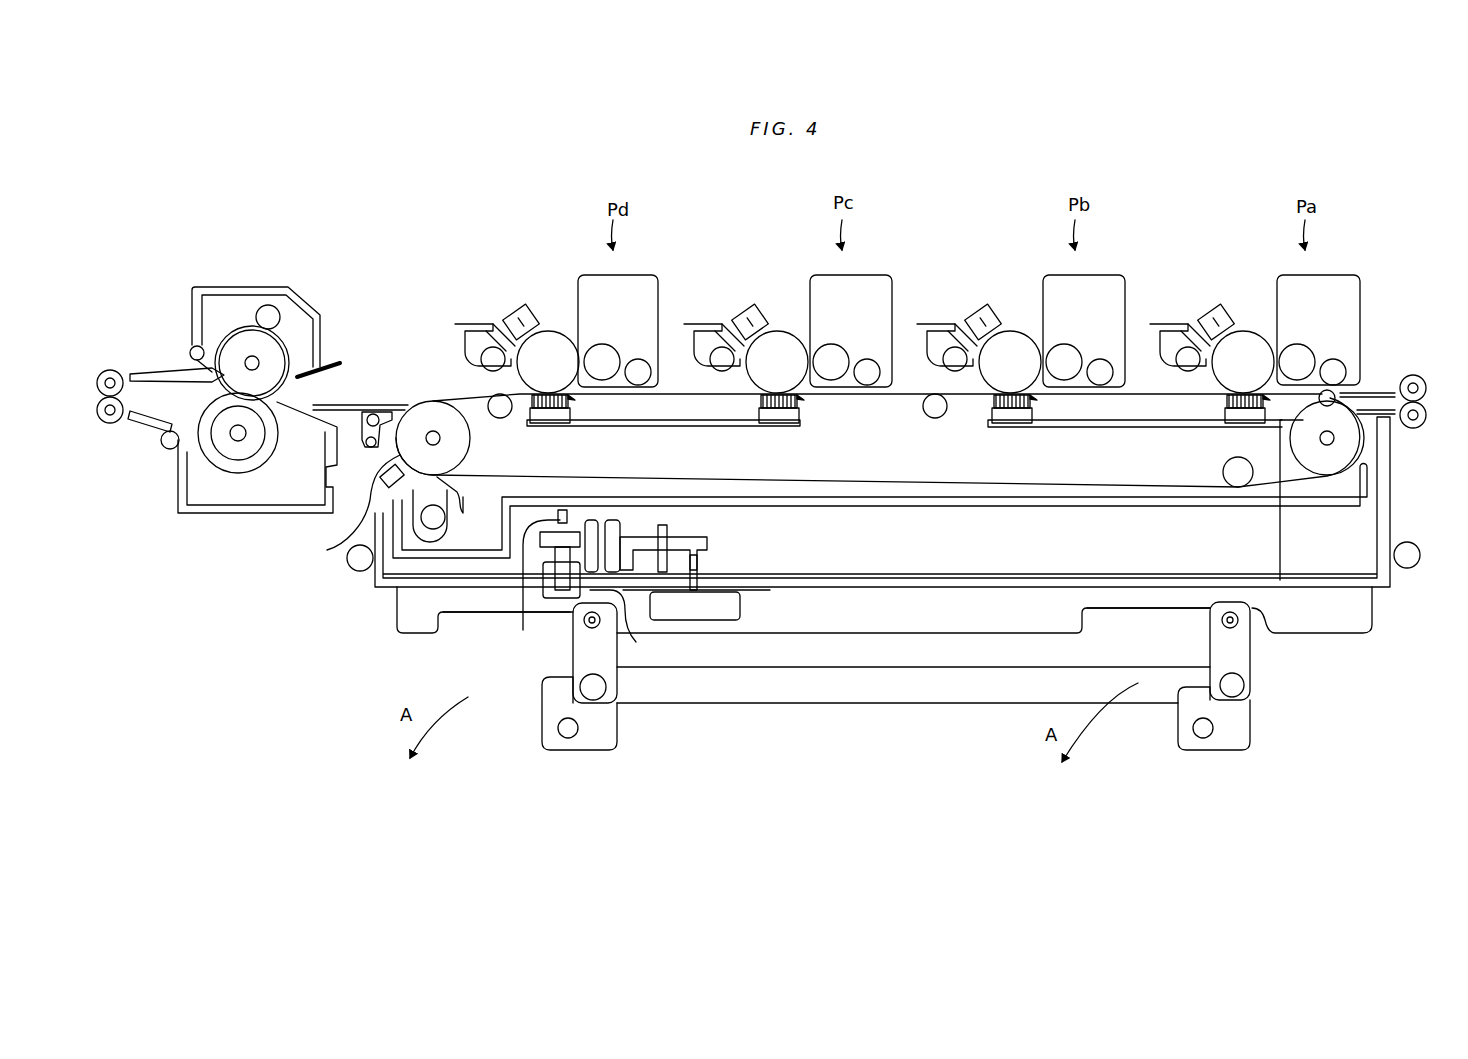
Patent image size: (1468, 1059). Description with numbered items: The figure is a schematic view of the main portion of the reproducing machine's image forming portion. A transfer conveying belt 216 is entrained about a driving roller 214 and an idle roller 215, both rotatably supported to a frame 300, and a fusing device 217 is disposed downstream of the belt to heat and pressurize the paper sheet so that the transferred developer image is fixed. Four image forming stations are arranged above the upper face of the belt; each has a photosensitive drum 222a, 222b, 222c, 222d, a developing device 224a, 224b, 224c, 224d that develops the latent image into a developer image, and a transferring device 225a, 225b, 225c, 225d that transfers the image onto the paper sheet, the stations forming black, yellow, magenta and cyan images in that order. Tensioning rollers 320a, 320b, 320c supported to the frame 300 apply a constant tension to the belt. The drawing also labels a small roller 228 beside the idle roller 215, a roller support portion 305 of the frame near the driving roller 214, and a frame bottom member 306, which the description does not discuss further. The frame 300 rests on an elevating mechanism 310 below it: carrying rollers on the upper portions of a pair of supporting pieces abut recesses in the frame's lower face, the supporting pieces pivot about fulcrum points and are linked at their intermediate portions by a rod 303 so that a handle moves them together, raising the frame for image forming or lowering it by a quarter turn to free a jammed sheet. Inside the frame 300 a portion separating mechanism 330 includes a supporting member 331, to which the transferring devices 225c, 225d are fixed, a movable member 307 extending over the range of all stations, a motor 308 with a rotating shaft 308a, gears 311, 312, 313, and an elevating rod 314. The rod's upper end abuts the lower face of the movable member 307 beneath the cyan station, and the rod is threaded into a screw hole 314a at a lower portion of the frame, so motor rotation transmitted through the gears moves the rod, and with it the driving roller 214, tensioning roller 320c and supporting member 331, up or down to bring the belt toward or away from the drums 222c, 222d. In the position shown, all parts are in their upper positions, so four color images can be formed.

The driving roller 214 is at (362, 525).
The idle roller 215 is at (1352, 452).
The transfer conveying belt 216 is at (860, 472).
The fusing device 217 is at (264, 287).
The photosensitive drum 222a is at (1243, 333).
The photosensitive drum 222b is at (1010, 333).
The photosensitive drum 222c is at (777, 334).
The photosensitive drum 222d is at (548, 333).
The developing device 224a is at (1332, 305).
The developing device 224b is at (1095, 306).
The developing device 224c is at (860, 306).
The developing device 224d is at (628, 306).
The transferring device 225a is at (1236, 426).
The transferring device 225b is at (1016, 433).
The transferring device 225c is at (787, 434).
The transferring device 225d is at (542, 434).
The secondary transfer roller 228 is at (1338, 390).
The frame 300 is at (1358, 637).
The rod 303 is at (800, 706).
The roller support portion 305 is at (455, 512).
The frame bottom member 306 is at (870, 588).
The movable member 307 is at (1077, 507).
The motor 308 is at (742, 608).
The rotating shaft 308a is at (705, 570).
The elevating mechanism 310 is at (603, 782).
The gear 311 is at (710, 535).
The gear 312 is at (625, 520).
The gear 313 is at (578, 510).
The elevating rod 314 is at (522, 628).
The screw hole 314a is at (636, 640).
The tensioning roller 320a is at (1222, 472).
The tensioning roller 320b is at (935, 418).
The tensioning roller 320c is at (497, 396).
The portion separating mechanism 330 is at (940, 542).
The supporting member 331 is at (703, 430).